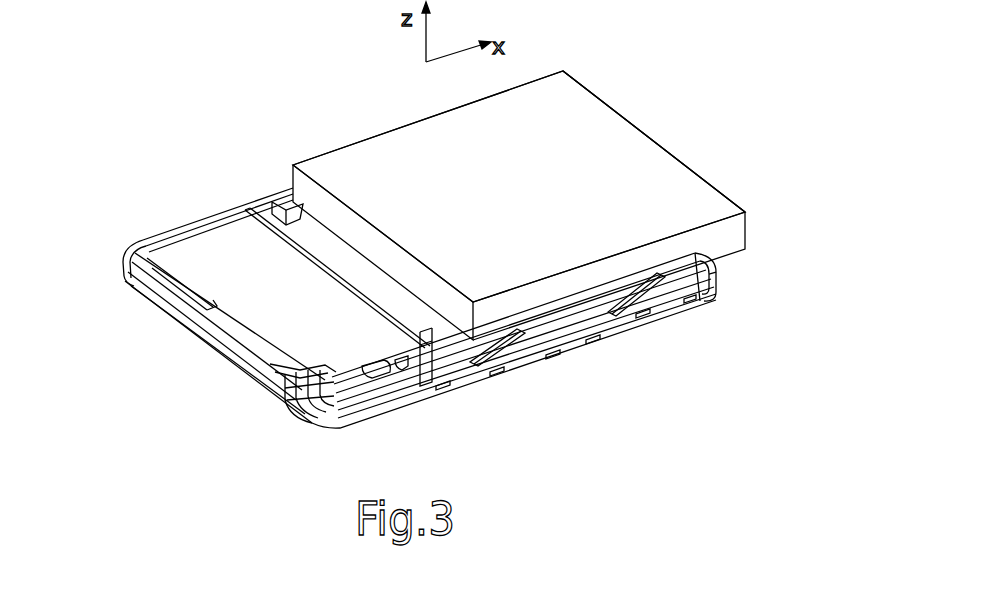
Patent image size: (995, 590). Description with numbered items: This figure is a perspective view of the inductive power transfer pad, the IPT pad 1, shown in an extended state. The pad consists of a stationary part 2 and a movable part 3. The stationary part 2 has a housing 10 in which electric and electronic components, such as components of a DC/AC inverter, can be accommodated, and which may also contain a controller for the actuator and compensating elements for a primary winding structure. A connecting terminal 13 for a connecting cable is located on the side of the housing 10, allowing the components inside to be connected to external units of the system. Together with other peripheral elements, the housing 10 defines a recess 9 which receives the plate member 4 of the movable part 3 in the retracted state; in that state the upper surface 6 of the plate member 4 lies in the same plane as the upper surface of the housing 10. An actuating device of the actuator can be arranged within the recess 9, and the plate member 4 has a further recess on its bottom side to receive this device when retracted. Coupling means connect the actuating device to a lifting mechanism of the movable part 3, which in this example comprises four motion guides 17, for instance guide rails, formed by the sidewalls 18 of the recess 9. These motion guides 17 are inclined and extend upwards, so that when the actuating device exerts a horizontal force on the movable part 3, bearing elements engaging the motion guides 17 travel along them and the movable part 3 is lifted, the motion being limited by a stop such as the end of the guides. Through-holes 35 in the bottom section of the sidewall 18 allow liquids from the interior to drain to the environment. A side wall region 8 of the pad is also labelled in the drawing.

The IPT pad 1 is at (660, 317).
The stationary part 2 is at (222, 242).
The movable part 3 is at (638, 160).
The plate member 4 is at (610, 138).
The upper surface 6 is at (555, 120).
The side wall 8 is at (220, 333).
The recess 9 is at (430, 332).
The housing 10 is at (190, 240).
The connecting terminal 13 is at (280, 395).
The motion guides 17 is at (493, 350).
The sidewalls 18 is at (713, 273).
The through-holes 35 is at (443, 387).